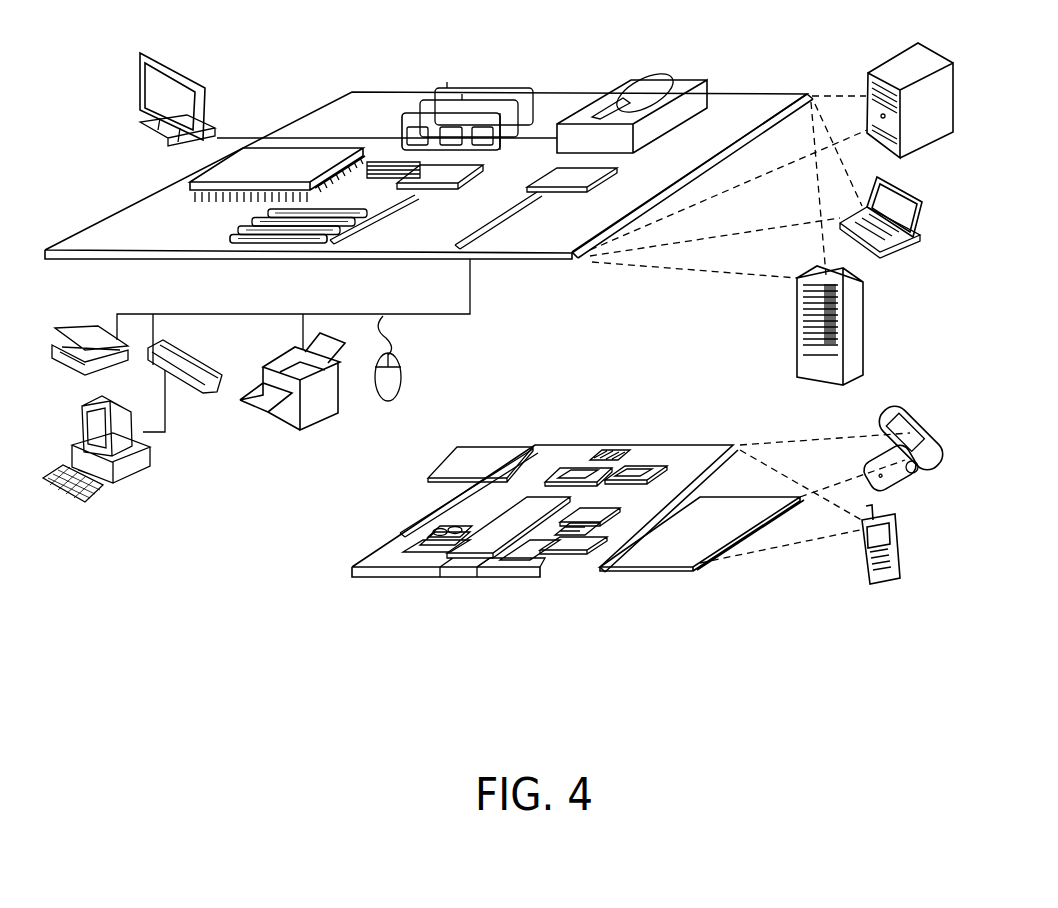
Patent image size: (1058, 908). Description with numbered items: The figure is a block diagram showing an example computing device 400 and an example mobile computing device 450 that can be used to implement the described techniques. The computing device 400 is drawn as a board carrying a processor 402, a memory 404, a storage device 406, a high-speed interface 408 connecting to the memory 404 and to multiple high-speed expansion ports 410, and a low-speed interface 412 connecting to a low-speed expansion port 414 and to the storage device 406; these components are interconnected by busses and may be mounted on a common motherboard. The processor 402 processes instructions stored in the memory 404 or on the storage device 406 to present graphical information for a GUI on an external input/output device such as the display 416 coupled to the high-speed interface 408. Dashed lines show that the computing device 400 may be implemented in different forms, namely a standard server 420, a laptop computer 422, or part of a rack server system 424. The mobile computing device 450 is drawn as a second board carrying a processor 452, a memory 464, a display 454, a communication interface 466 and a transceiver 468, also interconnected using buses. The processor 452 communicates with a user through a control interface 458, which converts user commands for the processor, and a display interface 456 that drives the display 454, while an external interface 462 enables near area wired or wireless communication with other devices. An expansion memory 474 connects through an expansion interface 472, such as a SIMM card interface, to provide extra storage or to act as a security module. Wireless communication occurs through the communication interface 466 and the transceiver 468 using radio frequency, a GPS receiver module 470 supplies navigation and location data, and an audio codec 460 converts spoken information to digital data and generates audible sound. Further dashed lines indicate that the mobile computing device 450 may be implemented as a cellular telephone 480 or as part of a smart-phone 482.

The computing device 400 is at (290, 70).
The processor 402 is at (165, 185).
The memory 404 is at (447, 84).
The storage device 406 is at (620, 90).
The high-speed interface 408 is at (390, 137).
The high-speed expansion ports 410 is at (230, 234).
The low-speed interface 412 is at (545, 177).
The low-speed expansion port 414 is at (500, 256).
The display 416 is at (150, 55).
The standard server 420 is at (870, 85).
The laptop computer 422 is at (918, 230).
The rack server system 424 is at (800, 345).
The mobile computing device 450 is at (330, 580).
The processor 452 is at (483, 570).
The display 454 is at (680, 557).
The display interface 456 is at (548, 570).
The control interface 458 is at (572, 563).
The audio codec 460 is at (595, 553).
The external interface 462 is at (460, 578).
The memory 464 is at (420, 536).
The communication interface 466 is at (582, 462).
The transceiver 468 is at (640, 465).
The GPS receiver module 470 is at (620, 450).
The expansion interface 472 is at (520, 455).
The expansion memory 474 is at (465, 458).
The cellular telephone 480 is at (905, 420).
The smart-phone 482 is at (860, 548).